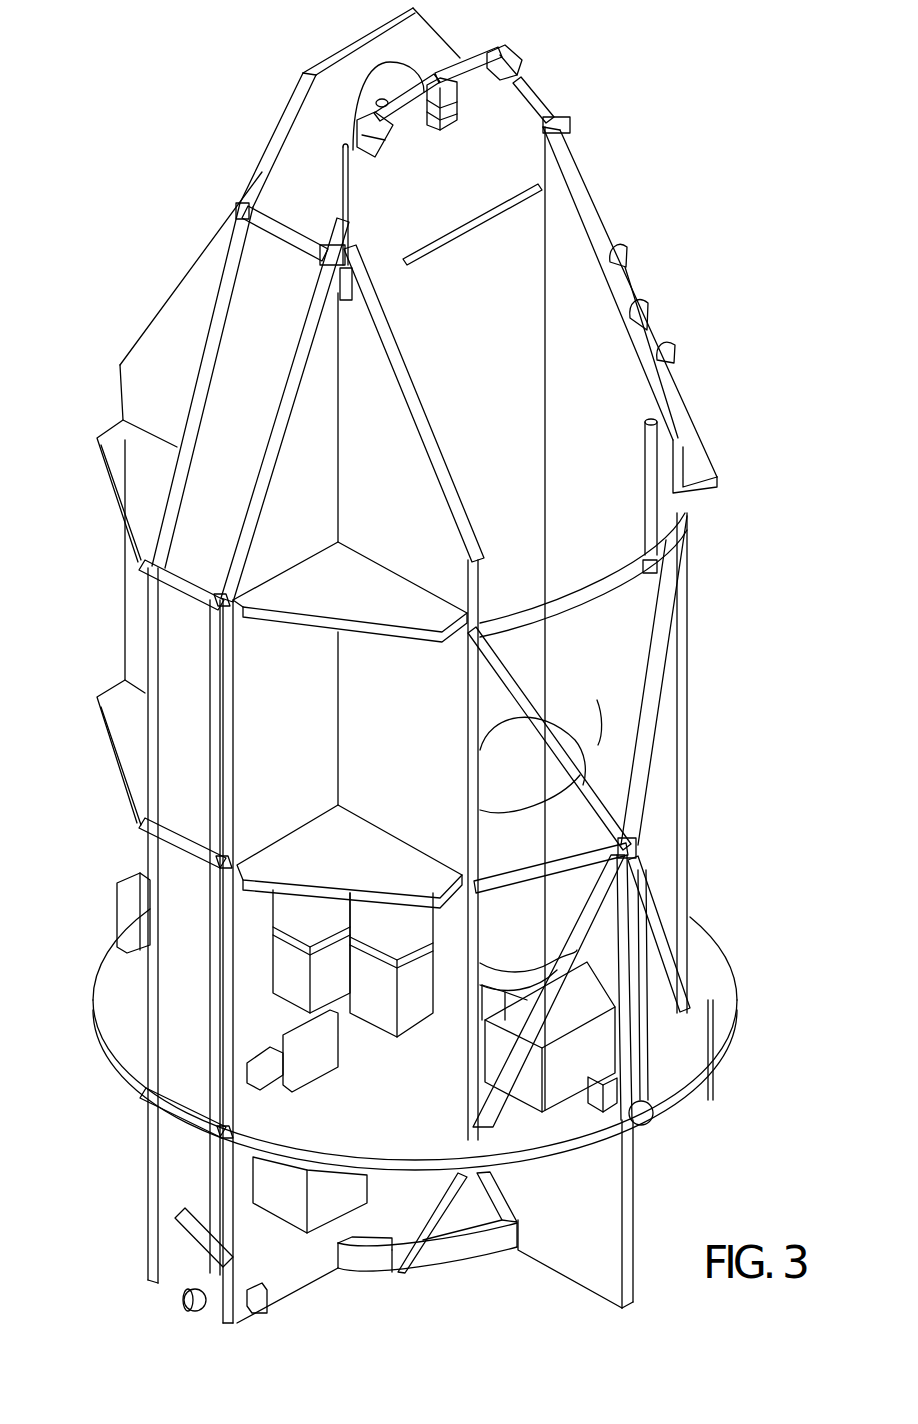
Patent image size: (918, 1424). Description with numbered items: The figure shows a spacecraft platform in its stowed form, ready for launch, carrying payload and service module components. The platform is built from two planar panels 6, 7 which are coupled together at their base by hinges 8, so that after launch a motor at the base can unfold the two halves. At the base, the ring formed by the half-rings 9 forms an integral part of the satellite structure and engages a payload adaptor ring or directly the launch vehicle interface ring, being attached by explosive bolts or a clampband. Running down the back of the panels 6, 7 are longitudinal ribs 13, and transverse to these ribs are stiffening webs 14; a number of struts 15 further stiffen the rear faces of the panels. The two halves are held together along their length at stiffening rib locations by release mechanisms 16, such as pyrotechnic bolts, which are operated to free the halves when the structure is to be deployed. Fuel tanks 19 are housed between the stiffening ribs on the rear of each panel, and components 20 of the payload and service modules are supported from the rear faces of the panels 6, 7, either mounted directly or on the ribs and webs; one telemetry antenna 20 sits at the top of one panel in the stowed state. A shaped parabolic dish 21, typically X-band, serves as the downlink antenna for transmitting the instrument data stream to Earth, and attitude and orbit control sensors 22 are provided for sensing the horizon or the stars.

The panel 6 is at (272, 130).
The panel 7 is at (528, 80).
The hinge 8 is at (182, 1297).
The half-ring 9 is at (453, 1273).
The longitudinal rib 13 is at (200, 355).
The stiffening web 14 is at (313, 612).
The strut 15 is at (650, 682).
The release mechanism 16 is at (270, 243).
The fuel tank 19 is at (490, 725).
The payload and service module component 20 is at (348, 240).
The parabolic dish 21 is at (415, 57).
The AOCS sensor 22 is at (487, 53).